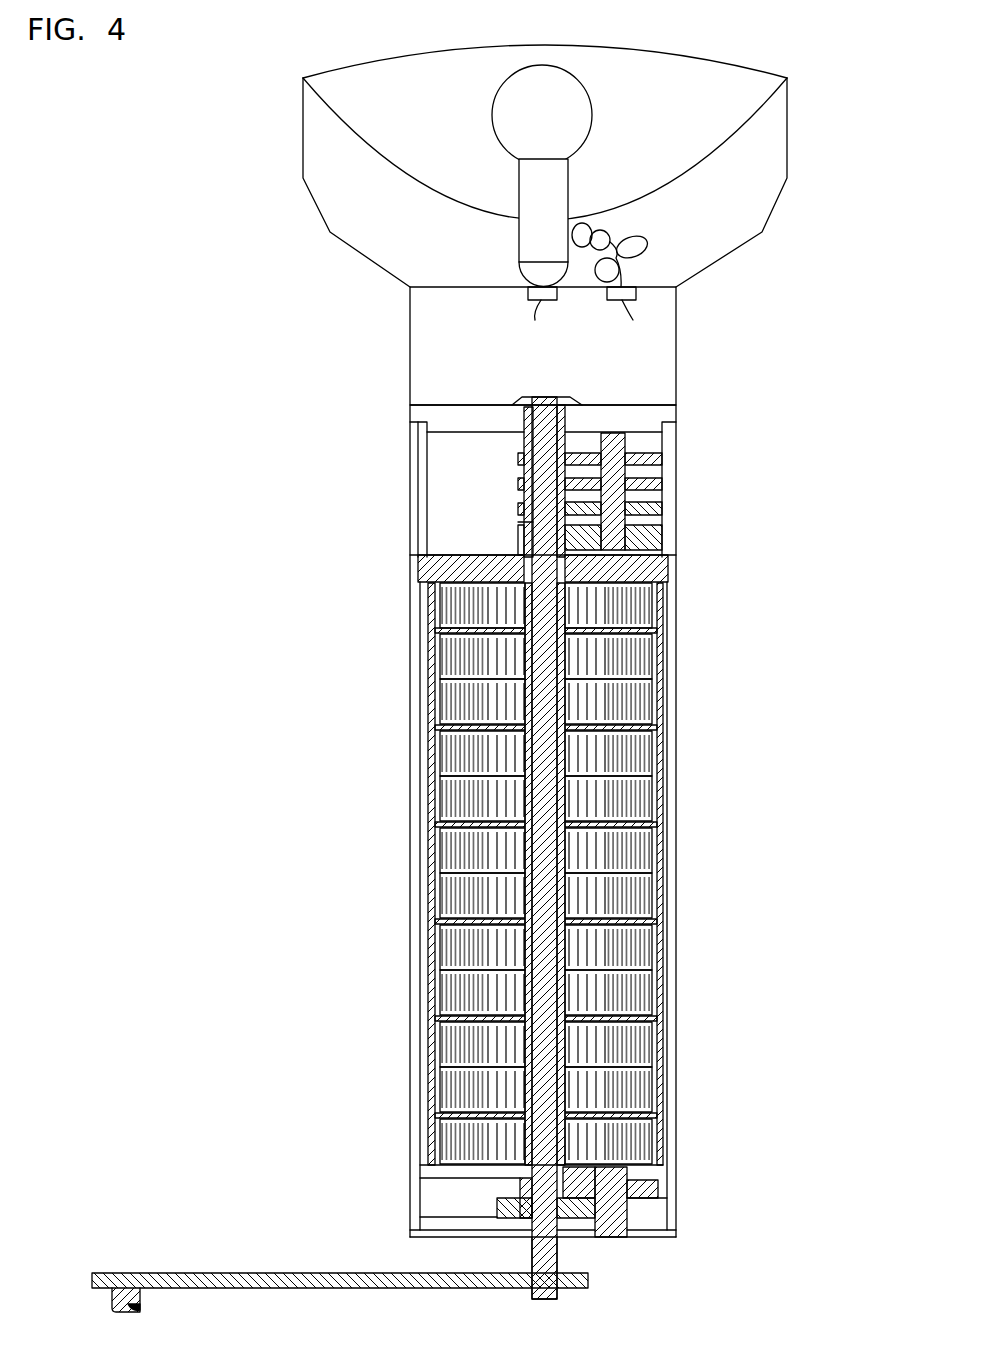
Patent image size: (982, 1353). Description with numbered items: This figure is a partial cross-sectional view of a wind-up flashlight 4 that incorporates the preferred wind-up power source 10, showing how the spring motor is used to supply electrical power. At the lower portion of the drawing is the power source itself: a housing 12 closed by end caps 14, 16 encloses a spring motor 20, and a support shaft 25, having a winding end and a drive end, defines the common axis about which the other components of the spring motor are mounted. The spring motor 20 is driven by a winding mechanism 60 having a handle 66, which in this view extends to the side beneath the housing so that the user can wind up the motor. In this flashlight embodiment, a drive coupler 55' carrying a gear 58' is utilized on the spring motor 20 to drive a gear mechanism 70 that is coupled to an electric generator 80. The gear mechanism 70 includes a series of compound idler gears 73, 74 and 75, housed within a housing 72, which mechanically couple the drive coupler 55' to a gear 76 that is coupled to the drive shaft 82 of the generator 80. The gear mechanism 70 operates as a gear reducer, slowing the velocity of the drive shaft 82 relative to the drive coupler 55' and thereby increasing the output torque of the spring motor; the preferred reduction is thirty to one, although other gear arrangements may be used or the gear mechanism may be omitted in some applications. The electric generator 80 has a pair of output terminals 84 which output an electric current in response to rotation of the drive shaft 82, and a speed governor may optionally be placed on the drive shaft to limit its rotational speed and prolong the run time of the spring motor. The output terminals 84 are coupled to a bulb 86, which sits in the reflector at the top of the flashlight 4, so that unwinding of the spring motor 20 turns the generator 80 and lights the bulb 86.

The wind-up flashlight 4 is at (433, 40).
The bulb 86 is at (588, 90).
The electric generator 80 is at (680, 345).
The output terminals 84 is at (545, 302).
The drive shaft 82 is at (543, 410).
The gear 76 is at (522, 440).
The gear mechanism 70 is at (668, 445).
The housing 72 is at (417, 467).
The compound idler gear 74 is at (522, 482).
The compound idler gear 75 is at (648, 482).
The compound idler gear 73 is at (655, 533).
The gear 58' is at (481, 500).
The drive coupler 55' is at (477, 540).
The end cap 14 is at (665, 572).
The housing 12 is at (677, 720).
The wind-up power source 10 is at (678, 915).
The spring motor 20 is at (410, 906).
The end cap 16 is at (655, 1172).
The winding mechanism 60 is at (678, 1223).
The handle 66 is at (140, 1273).
The support shaft 25 is at (545, 1252).